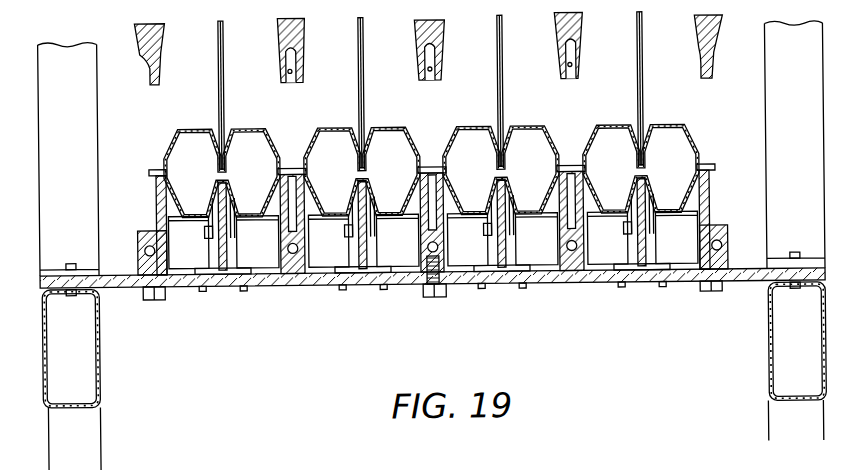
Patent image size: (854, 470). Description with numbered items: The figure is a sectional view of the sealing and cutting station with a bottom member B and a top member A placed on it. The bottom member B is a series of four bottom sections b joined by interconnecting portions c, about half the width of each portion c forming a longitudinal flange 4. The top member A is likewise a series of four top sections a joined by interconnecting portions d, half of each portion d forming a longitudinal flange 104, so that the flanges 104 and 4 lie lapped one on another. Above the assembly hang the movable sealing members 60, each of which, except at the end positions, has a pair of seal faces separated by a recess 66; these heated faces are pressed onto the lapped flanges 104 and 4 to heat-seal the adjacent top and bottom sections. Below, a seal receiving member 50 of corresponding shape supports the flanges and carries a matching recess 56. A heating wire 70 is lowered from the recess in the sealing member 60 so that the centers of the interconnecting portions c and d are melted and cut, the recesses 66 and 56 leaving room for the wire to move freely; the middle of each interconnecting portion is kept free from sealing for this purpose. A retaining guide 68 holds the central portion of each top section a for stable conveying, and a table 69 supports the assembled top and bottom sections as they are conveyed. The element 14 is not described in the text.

The sealing member 60 is at (167, 39).
The recess 66 is at (300, 61).
The heating wire 70 is at (292, 73).
The retaining guide 68 is at (364, 140).
The longitudinal flange 4 is at (156, 183).
The longitudinal flange 104 is at (157, 162).
The seal receiving member 50 is at (445, 233).
The recess 56 is at (428, 166).
The table 69 is at (312, 216).
The center stem 14 is at (376, 237).
The top section a is at (199, 127).
The bottom section b is at (197, 211).
The interconnecting portion c is at (572, 162).
The interconnecting portion d is at (528, 236).
The top member A is at (686, 146).
The bottom member B is at (686, 190).